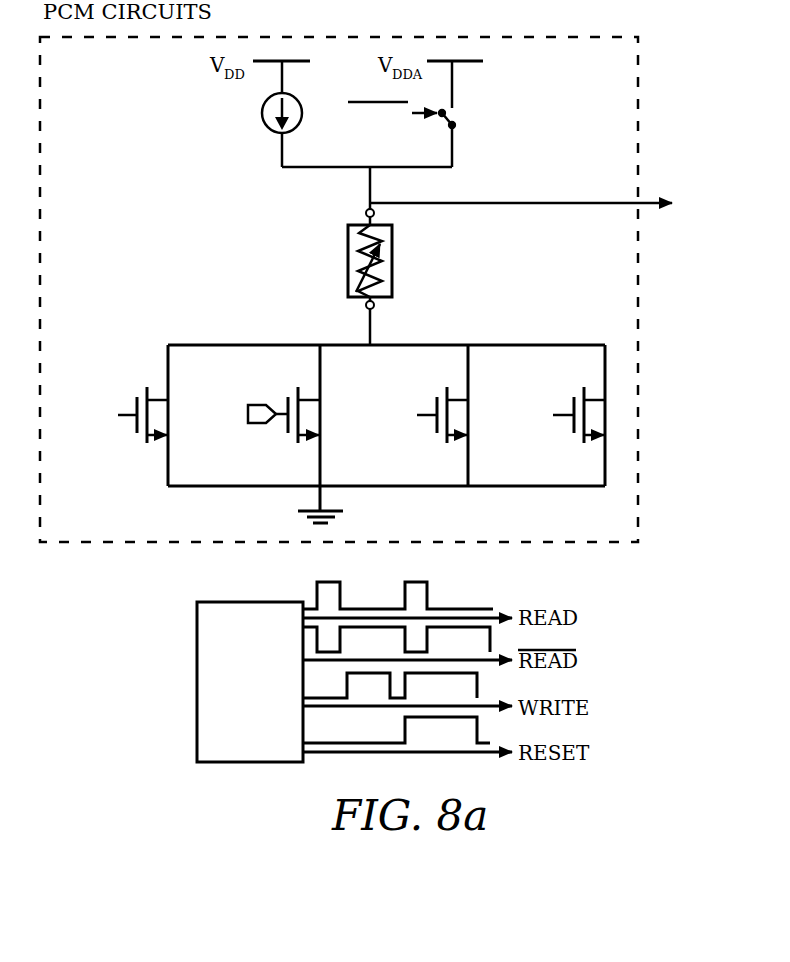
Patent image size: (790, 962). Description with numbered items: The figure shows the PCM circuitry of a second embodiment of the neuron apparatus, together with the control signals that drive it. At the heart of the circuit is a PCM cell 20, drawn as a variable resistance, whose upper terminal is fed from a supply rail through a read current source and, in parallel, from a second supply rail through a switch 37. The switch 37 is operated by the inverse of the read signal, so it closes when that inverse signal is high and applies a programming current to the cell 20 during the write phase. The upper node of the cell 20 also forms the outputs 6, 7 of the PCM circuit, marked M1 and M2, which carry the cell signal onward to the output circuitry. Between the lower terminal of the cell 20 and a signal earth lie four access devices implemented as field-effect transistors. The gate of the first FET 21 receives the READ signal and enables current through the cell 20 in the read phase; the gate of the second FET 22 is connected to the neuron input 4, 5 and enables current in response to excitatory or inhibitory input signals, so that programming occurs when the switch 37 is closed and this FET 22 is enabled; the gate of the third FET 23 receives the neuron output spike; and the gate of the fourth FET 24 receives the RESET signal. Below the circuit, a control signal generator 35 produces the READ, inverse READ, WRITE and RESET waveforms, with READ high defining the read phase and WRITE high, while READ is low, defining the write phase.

The control signal generator 35 is at (297, 101).
The switch 37 is at (455, 107).
The PCM circuit output 6 is at (556, 190).
The PCM circuit output 7 is at (559, 201).
The PCM cell 20 is at (393, 258).
The first FET 21 is at (131, 390).
The second FET 22 is at (284, 390).
The third FET 23 is at (433, 390).
The fourth FET 24 is at (569, 390).
The neuron input 4 is at (227, 433).
The neuron input 5 is at (255, 426).